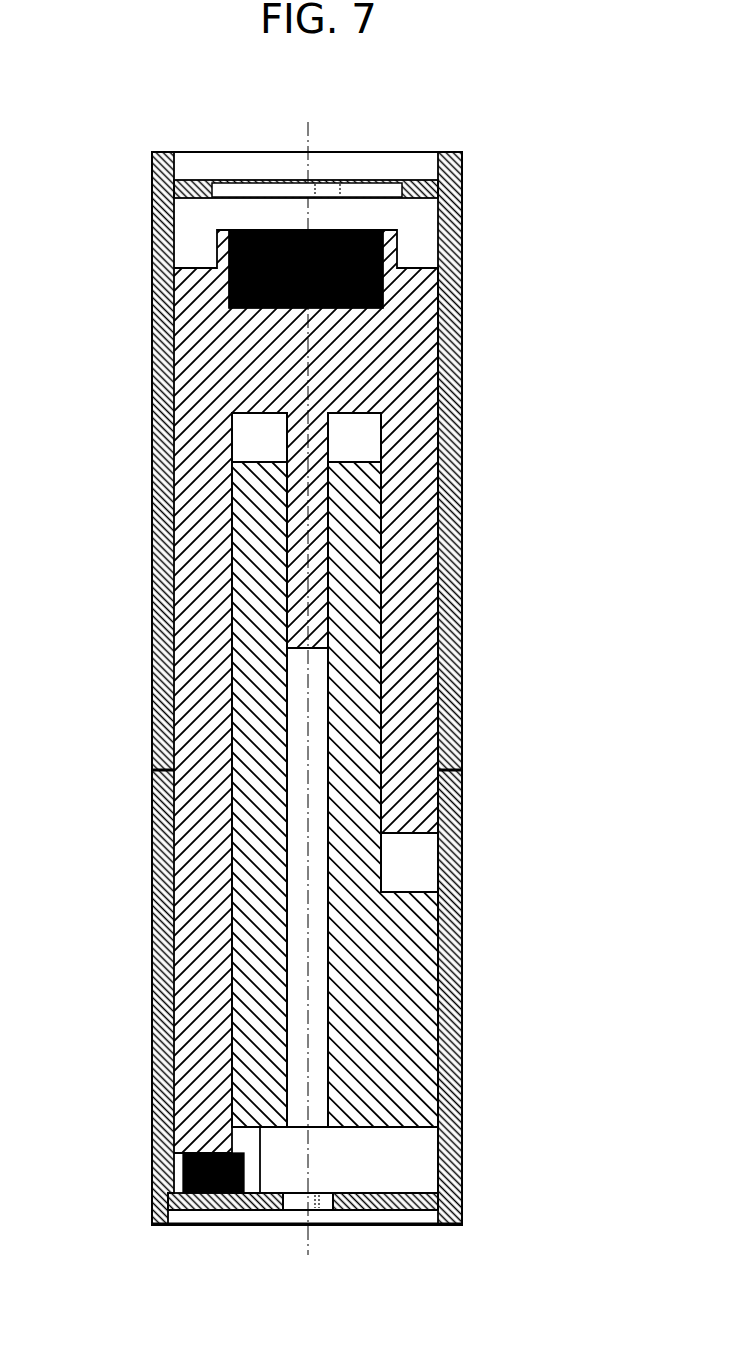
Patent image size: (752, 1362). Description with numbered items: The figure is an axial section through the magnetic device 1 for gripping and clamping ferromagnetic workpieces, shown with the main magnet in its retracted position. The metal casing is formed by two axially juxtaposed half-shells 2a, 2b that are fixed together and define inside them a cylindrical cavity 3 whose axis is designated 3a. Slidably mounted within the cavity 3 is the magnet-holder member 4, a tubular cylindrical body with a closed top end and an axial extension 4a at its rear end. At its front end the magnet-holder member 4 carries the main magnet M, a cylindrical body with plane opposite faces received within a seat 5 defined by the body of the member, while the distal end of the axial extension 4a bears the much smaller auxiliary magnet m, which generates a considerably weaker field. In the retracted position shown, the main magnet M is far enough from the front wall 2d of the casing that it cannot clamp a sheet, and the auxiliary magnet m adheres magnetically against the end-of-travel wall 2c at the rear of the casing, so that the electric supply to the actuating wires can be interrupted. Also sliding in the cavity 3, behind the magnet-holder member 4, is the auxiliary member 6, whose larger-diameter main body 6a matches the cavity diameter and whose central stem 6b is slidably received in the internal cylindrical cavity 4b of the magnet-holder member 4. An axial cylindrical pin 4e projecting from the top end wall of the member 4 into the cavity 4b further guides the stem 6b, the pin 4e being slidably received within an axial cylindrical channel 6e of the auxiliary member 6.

The magnetic device 1 is at (580, 278).
The half-shell 2a is at (152, 505).
The half-shell 2b is at (152, 1020).
The end-of-travel wall 2c is at (395, 1193).
The front wall 2d is at (418, 180).
The cylindrical cavity 3 is at (438, 1160).
The axis of the cavity 3a is at (318, 1210).
The magnet-holder member 4 is at (211, 346).
The axial extension 4a is at (255, 818).
The internal cylindrical cavity 4b is at (374, 515).
The axial cylindrical pin 4e is at (330, 426).
The seat 5 is at (228, 263).
The main magnet M is at (348, 230).
The auxiliary member 6 is at (383, 855).
The main body 6a is at (398, 975).
The central stem 6b is at (350, 742).
The axial cylindrical channel 6e is at (310, 670).
The auxiliary magnet m is at (213, 1198).